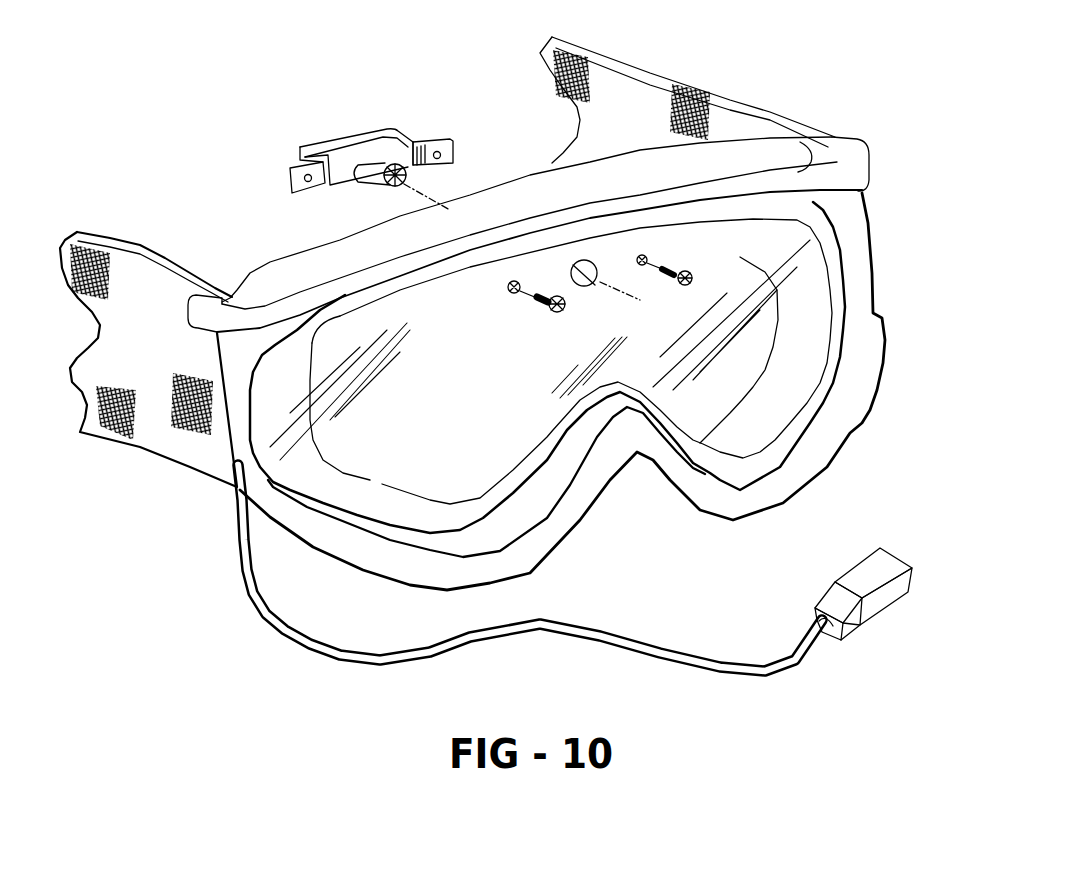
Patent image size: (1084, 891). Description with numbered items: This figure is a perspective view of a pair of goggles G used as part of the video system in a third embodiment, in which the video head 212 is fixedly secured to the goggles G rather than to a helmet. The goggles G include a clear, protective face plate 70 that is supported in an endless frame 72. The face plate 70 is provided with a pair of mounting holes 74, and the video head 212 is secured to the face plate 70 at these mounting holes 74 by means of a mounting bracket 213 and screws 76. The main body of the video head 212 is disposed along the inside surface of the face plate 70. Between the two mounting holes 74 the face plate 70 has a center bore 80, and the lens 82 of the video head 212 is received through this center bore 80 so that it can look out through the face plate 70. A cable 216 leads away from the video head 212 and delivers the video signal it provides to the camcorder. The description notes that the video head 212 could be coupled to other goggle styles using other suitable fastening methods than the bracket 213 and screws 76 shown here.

The goggles G is at (797, 173).
The face plate 70 is at (551, 398).
The endless frame 72 is at (842, 423).
The mounting holes 74 is at (515, 290).
The screws 76 is at (537, 300).
The center bore 80 is at (590, 284).
The lens 82 is at (377, 188).
The video head 212 is at (360, 147).
The mounting bracket 213 is at (297, 157).
The cable 216 is at (400, 653).